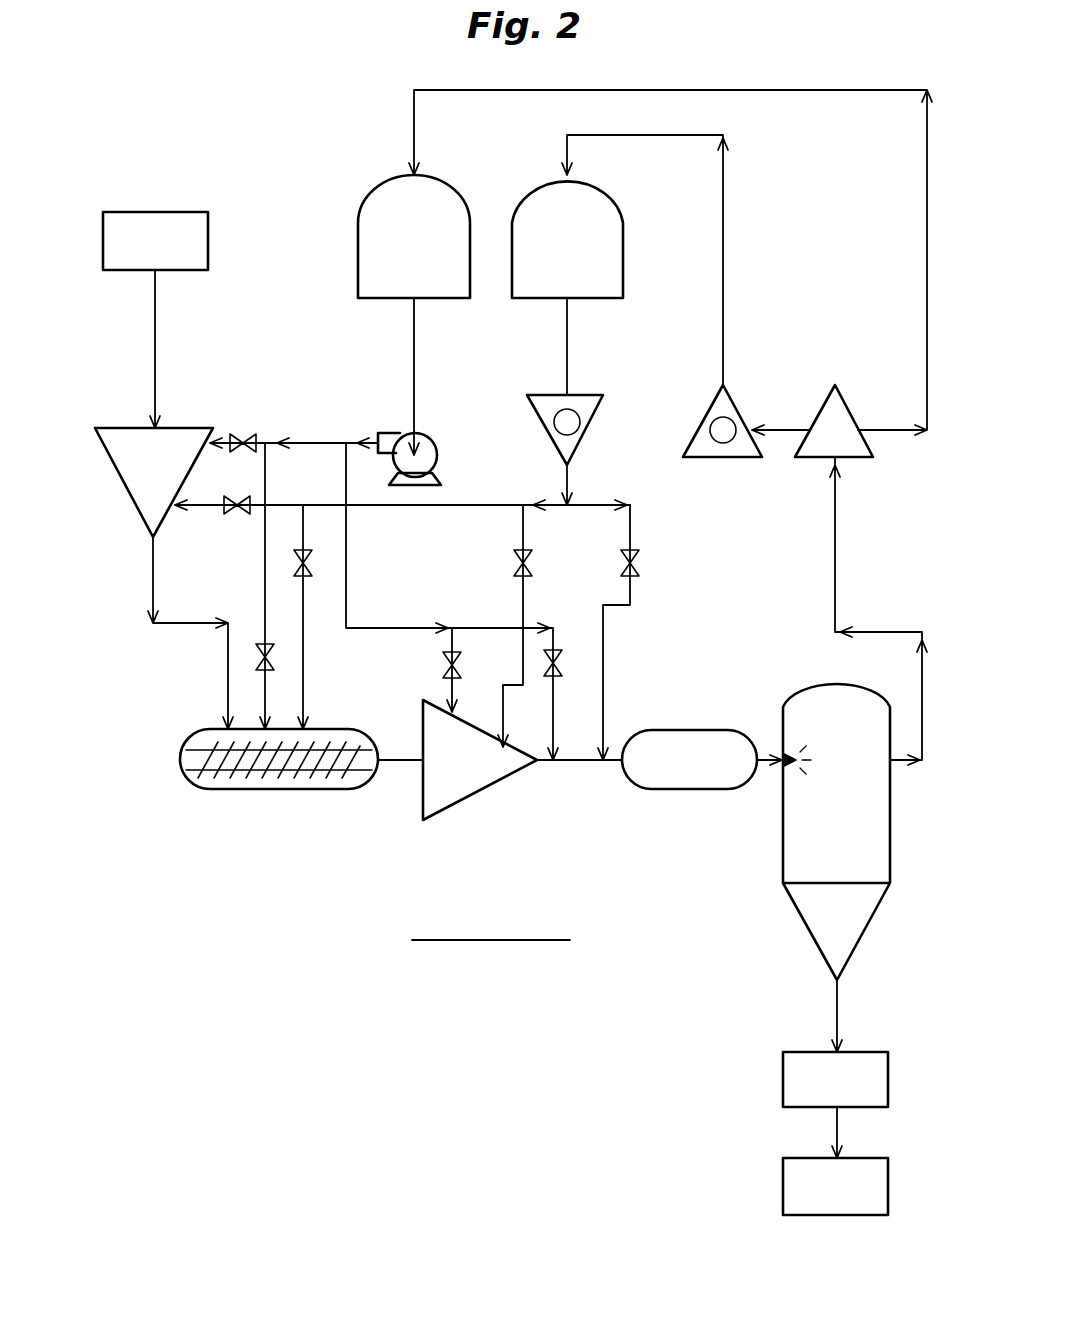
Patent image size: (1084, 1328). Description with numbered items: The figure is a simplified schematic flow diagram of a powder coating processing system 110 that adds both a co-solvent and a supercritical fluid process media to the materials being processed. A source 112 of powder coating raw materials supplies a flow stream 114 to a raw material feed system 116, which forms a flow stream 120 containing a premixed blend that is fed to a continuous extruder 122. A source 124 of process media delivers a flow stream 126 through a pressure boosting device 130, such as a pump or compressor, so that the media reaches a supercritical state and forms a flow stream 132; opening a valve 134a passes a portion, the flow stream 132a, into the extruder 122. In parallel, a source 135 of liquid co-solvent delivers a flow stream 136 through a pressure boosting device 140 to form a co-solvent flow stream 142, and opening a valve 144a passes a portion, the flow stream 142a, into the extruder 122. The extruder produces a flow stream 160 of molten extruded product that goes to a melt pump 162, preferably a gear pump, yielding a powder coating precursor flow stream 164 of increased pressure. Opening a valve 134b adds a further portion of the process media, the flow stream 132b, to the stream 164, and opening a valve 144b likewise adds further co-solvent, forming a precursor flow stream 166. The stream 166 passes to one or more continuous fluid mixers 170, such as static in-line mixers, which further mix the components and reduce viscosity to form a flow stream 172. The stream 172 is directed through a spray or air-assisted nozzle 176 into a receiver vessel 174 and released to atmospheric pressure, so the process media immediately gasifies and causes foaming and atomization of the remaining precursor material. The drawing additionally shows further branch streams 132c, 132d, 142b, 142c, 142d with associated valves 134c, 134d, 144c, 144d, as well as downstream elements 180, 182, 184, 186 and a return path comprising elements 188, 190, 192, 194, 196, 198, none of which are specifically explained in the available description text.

The powder coating processing system 110 is at (500, 942).
The source of powder coating raw materials 112 is at (135, 254).
The flow stream of raw materials 114 is at (157, 314).
The raw material feed system 116 is at (130, 428).
The flow stream of premixed blend 120 is at (165, 625).
The continuous extruder 122 is at (282, 792).
The source of process media 124 is at (540, 178).
The flow stream of process media 126 is at (570, 325).
The pressure boosting device 130 is at (610, 412).
The supercritical fluid process media flow stream 132 is at (570, 478).
The flow stream 132a is at (305, 668).
The flow stream 132b is at (606, 680).
The gas branch line 132c is at (210, 506).
The gas branch line 132d is at (520, 605).
The valve 134a is at (290, 565).
The valve 134b is at (640, 565).
The gas valve 134c is at (245, 497).
The gas valve 134d is at (515, 560).
The source of co-solvent 135 is at (362, 196).
The flow stream of co-solvent 136 is at (417, 327).
The pressure boosting device 140 is at (430, 430).
The co-solvent flow stream 142 is at (365, 440).
The flow stream 142a is at (262, 697).
The liquid branch line 142b is at (556, 718).
The liquid branch line 142c is at (210, 443).
The liquid branch line 142d is at (443, 690).
The valve 144a is at (258, 646).
The valve 144b is at (563, 656).
The liquid valve 144c is at (240, 435).
The liquid valve 144d is at (446, 660).
The flow stream of extruded product 160 is at (400, 765).
The melt pump 162 is at (440, 775).
The powder coating precursor flow stream of increased pressure 164 is at (548, 765).
The powder coating precursor flow stream 166 is at (612, 765).
The continuous fluid mixers 170 is at (692, 792).
The flow stream 172 is at (762, 766).
The receiver vessel 174 is at (817, 813).
The spray or air-assisted nozzle 176 is at (797, 755).
The separator outlet line 180 is at (835, 1011).
The collector 182 is at (817, 1093).
The collector outlet line 184 is at (835, 1133).
The storage 186 is at (817, 1200).
The recycle line 188 is at (875, 632).
The filter 190 is at (858, 462).
The pressure regulator 192 is at (778, 430).
The regulator outlet line 194 is at (733, 460).
The gas return line 196 is at (725, 227).
The liquid return line 198 is at (925, 292).